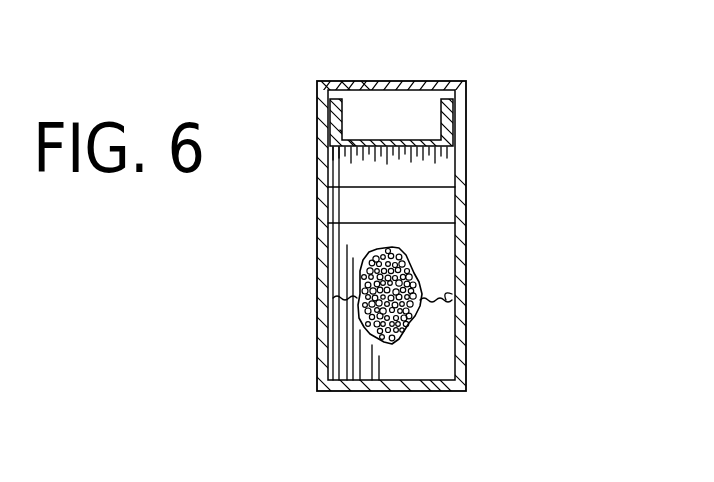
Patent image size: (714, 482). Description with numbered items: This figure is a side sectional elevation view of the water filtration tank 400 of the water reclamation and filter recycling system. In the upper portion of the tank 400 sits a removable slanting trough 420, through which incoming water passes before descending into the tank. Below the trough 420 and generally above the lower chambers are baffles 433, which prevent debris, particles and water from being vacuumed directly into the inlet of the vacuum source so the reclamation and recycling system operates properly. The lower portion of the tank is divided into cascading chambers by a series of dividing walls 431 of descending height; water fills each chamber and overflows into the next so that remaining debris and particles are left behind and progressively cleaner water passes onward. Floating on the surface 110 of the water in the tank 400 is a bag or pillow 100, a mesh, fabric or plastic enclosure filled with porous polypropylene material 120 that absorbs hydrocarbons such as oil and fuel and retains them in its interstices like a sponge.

The filtration tank 400 is at (397, 63).
The removable slanting trough 420 is at (445, 141).
The baffles 433 is at (435, 170).
The dividing walls 431 is at (437, 268).
The polypropylene material 120 is at (405, 252).
The surface of the water 110 is at (452, 294).
The bags or pillows 100 is at (357, 268).